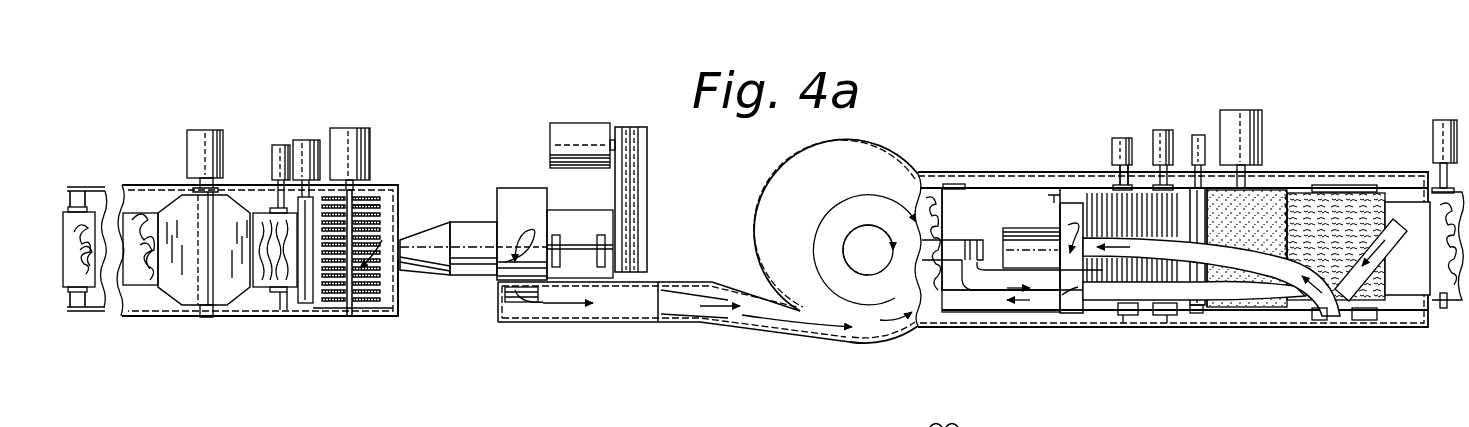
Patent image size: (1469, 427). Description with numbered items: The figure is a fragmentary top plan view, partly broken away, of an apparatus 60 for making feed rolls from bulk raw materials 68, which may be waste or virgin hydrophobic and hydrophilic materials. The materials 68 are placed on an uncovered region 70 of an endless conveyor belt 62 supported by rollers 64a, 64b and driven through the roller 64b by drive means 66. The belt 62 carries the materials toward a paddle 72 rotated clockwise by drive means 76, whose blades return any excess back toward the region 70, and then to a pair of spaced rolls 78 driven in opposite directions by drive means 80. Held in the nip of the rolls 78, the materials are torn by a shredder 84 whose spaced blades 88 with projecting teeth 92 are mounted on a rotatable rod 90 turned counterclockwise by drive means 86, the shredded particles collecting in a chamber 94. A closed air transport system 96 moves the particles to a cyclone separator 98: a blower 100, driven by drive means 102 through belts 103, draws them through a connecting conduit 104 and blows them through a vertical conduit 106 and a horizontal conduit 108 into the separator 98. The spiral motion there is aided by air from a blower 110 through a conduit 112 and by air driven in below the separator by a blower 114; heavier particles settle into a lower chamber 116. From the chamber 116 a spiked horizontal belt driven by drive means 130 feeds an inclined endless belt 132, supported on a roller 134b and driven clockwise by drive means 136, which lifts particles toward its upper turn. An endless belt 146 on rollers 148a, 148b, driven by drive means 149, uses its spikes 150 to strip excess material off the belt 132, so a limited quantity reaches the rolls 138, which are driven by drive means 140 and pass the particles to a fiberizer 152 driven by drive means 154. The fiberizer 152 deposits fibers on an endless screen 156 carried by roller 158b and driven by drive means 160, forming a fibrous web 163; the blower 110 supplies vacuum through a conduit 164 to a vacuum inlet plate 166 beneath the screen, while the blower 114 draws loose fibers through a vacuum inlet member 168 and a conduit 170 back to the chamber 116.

The apparatus 60 is at (633, 326).
The endless conveyor belt 62 is at (129, 221).
The roller 64a is at (78, 302).
The roller 64b is at (281, 310).
The drive means 66 is at (283, 144).
The bulk raw materials 68 is at (83, 222).
The uncovered region 70 is at (150, 222).
The paddle 72 is at (217, 217).
The drive means 76 is at (211, 130).
The spaced rolls 78 is at (312, 303).
The drive means 80 is at (313, 140).
The shredder 84 is at (402, 292).
The drive means 86 is at (374, 112).
The blades 88 is at (390, 206).
The rotatable rod 90 is at (353, 190).
The teeth 92 is at (350, 305).
The chamber 94 is at (335, 311).
The closed air transport system 96 is at (470, 277).
The cyclone separator 98 is at (837, 162).
The blower 100 is at (532, 188).
The drive means 102 is at (607, 123).
The belts 103 is at (645, 217).
The connecting conduit 104 is at (470, 221).
The vertical conduit 106 is at (510, 323).
The horizontal conduit 108 is at (592, 323).
The blower 110 is at (1022, 228).
The conduit 112 is at (1035, 308).
The blower 114 is at (952, 241).
The lower chamber 116 is at (944, 185).
The drive means 130 is at (1112, 148).
The endless belt 132 is at (1173, 187).
The roller 134b is at (1168, 315).
The drive means 136 is at (1168, 131).
The rolls 138 is at (1212, 189).
The drive means 140 is at (1207, 188).
The endless belt 146 is at (998, 190).
The roller 148a is at (956, 184).
The roller 148b is at (1124, 315).
The drive means 149 is at (1131, 138).
The spikes 150 is at (1062, 203).
The fiberizer 152 is at (1267, 207).
The drive means 154 is at (1270, 112).
The endless screen 156 is at (1385, 190).
The roller 158b is at (1446, 312).
The drive means 160 is at (1445, 120).
The fibrous web 163 is at (1343, 213).
The conduit 164 is at (1243, 262).
The vacuum inlet plate 166 is at (1363, 322).
The vacuum inlet member 168 is at (1400, 224).
The conduit 170 is at (1267, 297).